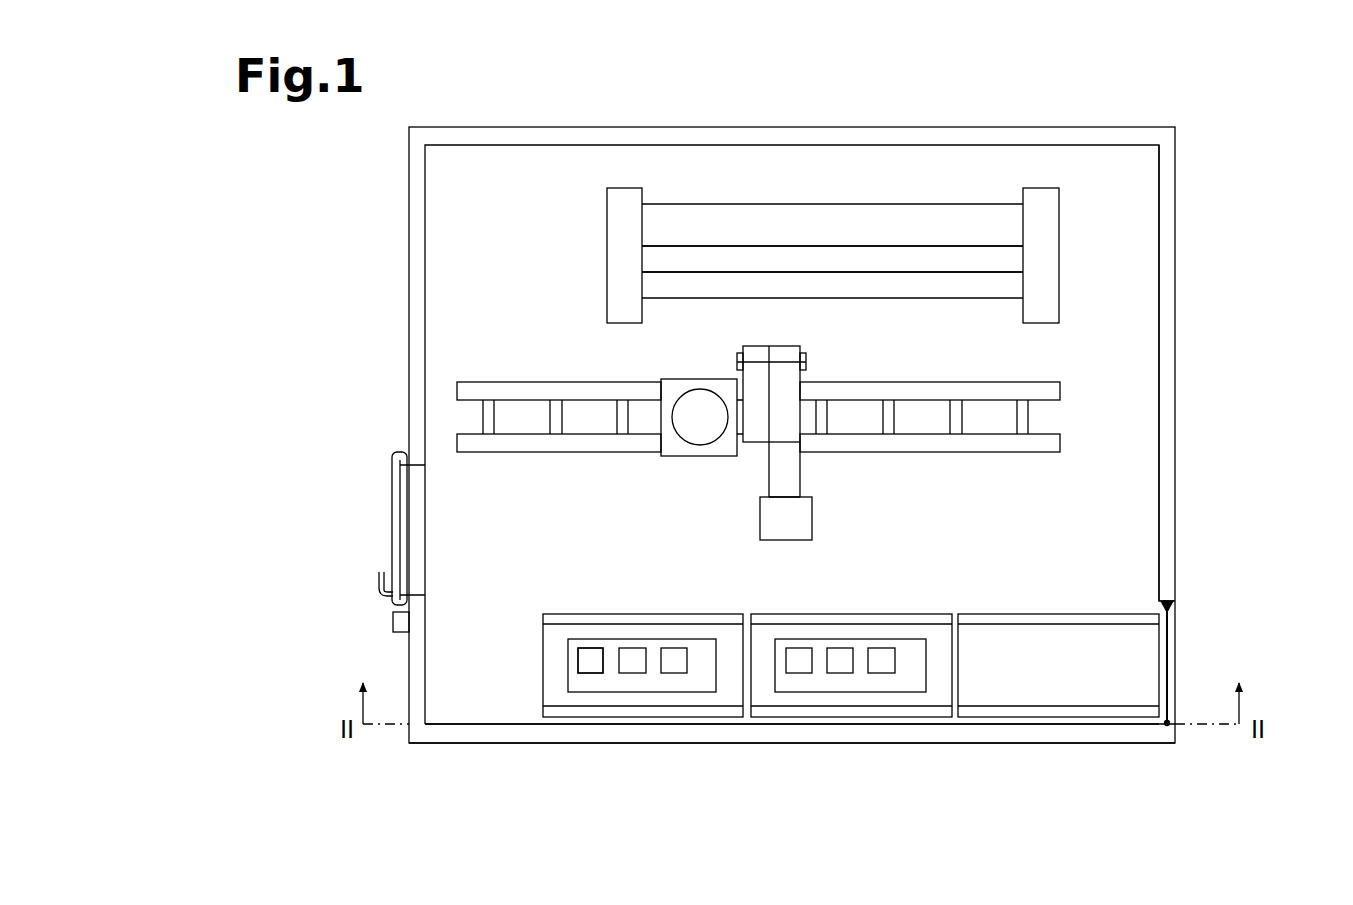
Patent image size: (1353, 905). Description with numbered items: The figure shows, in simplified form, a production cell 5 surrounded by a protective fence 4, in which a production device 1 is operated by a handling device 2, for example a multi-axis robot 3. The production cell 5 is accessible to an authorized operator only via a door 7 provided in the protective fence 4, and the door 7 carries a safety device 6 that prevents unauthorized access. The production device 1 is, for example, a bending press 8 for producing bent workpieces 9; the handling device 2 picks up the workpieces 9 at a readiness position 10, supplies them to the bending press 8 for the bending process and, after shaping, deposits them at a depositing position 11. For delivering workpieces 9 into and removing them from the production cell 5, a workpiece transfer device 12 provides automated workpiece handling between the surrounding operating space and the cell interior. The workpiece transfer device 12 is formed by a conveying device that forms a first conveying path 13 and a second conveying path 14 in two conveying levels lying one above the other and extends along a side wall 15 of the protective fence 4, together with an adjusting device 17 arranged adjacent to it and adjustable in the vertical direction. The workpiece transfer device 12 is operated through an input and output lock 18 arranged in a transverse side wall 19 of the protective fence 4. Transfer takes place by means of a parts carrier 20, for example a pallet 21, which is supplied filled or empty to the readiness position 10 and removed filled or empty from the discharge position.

The production device 1 is at (828, 190).
The handling device 2 is at (658, 466).
The multi-axis robot 3 is at (697, 425).
The protective fence 4 is at (402, 258).
The production cell 5 is at (512, 122).
The safety device 6 is at (393, 622).
The door 7 is at (397, 512).
The bending press 8 is at (935, 222).
The workpieces 9 is at (592, 652).
The readiness position 10 is at (908, 697).
The depositing position 11 is at (636, 684).
The workpiece transfer device 12 is at (1115, 548).
The first conveying path 13 is at (1190, 635).
The second conveying path 14 is at (1210, 668).
The side wall 15 is at (1007, 733).
The adjusting device 17 is at (521, 702).
The input and output lock 18 is at (1160, 648).
The transverse side wall 19 is at (1165, 273).
The parts carrier 20 is at (843, 690).
The pallet 21 is at (588, 684).